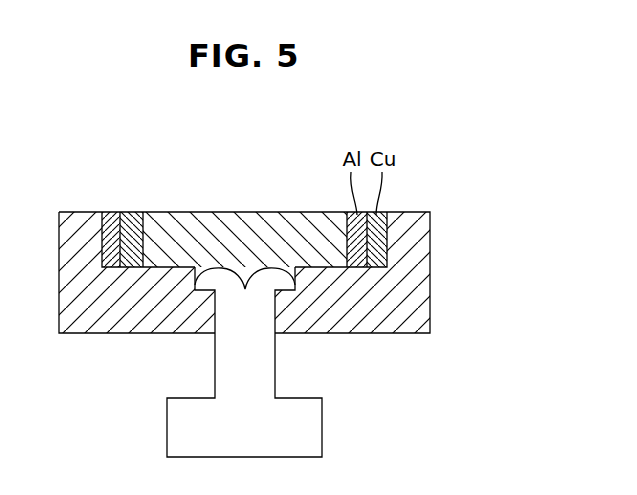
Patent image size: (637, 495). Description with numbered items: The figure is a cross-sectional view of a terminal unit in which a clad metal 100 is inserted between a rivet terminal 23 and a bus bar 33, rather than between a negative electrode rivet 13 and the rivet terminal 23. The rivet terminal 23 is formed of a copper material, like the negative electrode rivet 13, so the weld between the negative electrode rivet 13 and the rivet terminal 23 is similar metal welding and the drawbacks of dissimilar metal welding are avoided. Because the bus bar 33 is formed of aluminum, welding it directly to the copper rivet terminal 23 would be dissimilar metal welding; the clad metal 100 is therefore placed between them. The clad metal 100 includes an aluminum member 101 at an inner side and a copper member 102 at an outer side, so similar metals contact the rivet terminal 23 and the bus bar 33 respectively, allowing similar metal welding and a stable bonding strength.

The clad metal 100 is at (125, 176).
The aluminum member 101 is at (144, 205).
The copper member 102 is at (110, 212).
The bus bar 33 is at (269, 225).
The rivet terminal 23 is at (427, 282).
The negative electrode rivet 13 is at (318, 425).